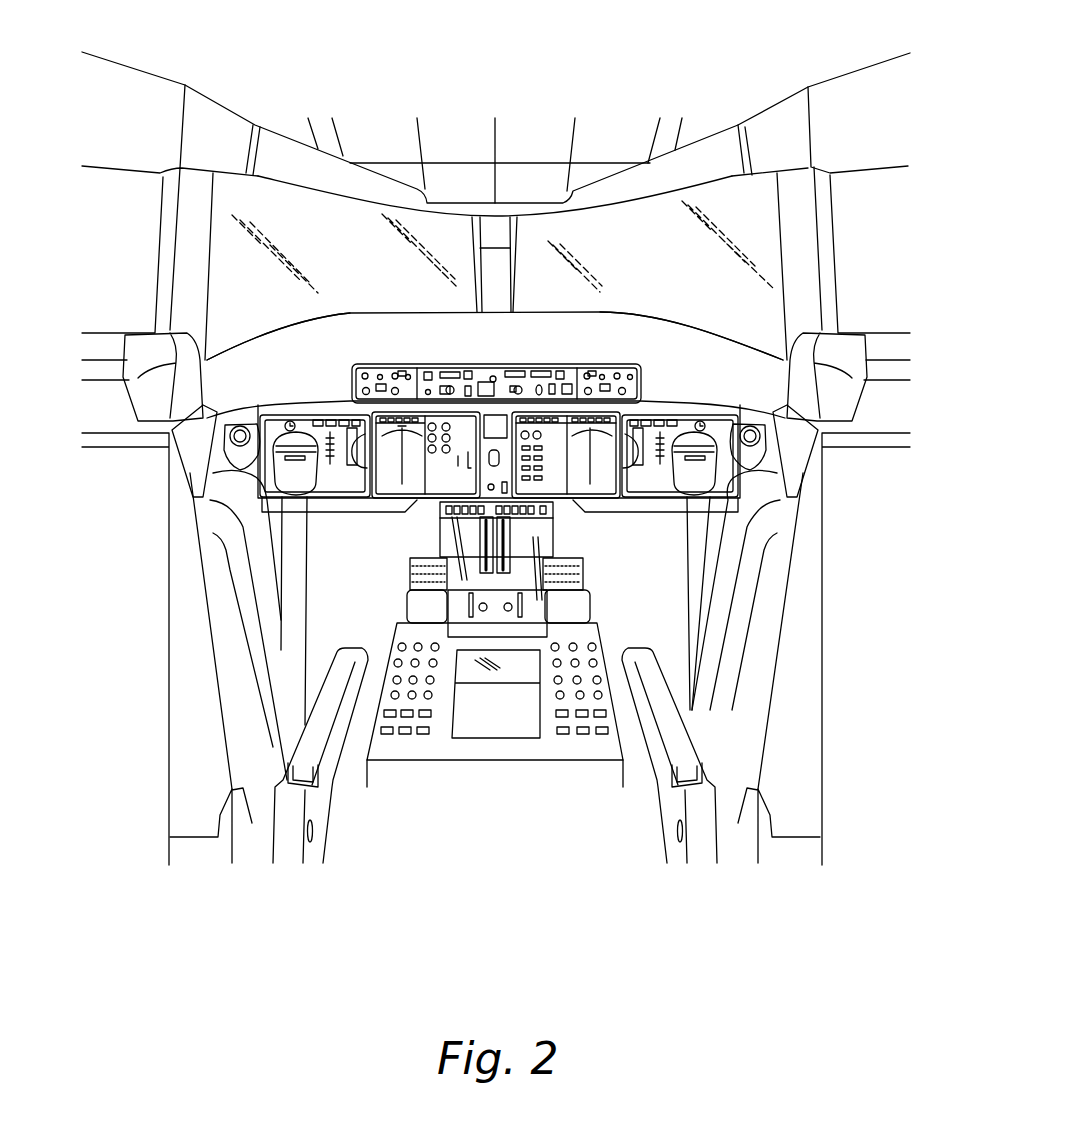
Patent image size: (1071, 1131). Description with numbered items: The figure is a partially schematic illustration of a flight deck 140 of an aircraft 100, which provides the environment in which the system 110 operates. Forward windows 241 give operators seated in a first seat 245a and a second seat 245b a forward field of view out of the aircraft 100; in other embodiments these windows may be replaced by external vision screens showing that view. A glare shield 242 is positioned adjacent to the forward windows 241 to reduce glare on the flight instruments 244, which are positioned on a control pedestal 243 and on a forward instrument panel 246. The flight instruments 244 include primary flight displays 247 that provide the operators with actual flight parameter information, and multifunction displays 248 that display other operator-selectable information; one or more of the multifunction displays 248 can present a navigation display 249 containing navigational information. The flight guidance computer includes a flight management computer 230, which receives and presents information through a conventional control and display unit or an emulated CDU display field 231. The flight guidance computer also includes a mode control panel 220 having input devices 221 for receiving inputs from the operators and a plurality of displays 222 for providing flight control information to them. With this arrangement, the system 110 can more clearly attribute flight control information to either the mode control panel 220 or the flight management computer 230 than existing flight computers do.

The aircraft 100 is at (813, 82).
The system 110 is at (419, 908).
The flight deck 140 is at (623, 920).
The mode control panel 220 is at (496, 260).
The input devices 221 is at (482, 377).
The displays 222 is at (598, 373).
The flight management computer 230 is at (624, 703).
The emulated CDU display field 231 is at (433, 543).
The forward windows 241 is at (350, 223).
The glare shield 242 is at (692, 335).
The control pedestal 243 is at (503, 780).
The flight instruments 244 is at (322, 338).
The first seat 245a is at (257, 640).
The second seat 245b is at (733, 652).
The forward instrument panel 246 is at (722, 360).
The primary flight displays 247 is at (323, 405).
The multifunction displays 248 is at (650, 628).
The navigation display 249 is at (395, 417).